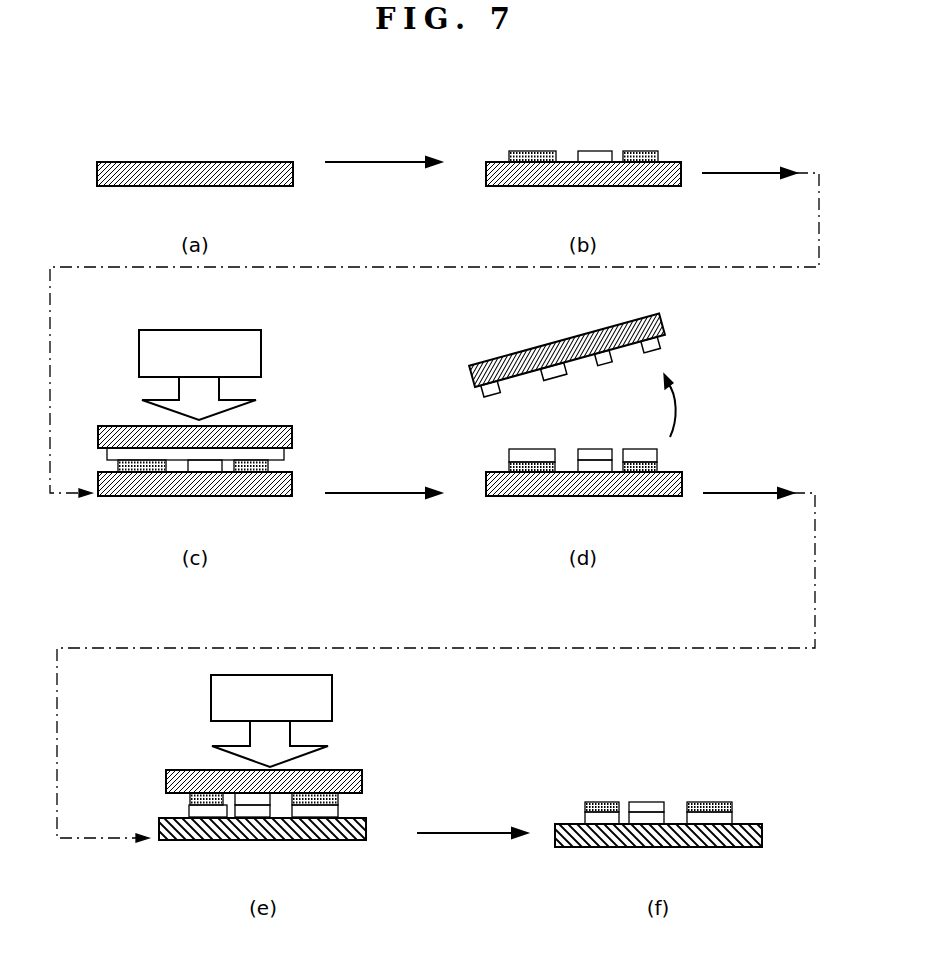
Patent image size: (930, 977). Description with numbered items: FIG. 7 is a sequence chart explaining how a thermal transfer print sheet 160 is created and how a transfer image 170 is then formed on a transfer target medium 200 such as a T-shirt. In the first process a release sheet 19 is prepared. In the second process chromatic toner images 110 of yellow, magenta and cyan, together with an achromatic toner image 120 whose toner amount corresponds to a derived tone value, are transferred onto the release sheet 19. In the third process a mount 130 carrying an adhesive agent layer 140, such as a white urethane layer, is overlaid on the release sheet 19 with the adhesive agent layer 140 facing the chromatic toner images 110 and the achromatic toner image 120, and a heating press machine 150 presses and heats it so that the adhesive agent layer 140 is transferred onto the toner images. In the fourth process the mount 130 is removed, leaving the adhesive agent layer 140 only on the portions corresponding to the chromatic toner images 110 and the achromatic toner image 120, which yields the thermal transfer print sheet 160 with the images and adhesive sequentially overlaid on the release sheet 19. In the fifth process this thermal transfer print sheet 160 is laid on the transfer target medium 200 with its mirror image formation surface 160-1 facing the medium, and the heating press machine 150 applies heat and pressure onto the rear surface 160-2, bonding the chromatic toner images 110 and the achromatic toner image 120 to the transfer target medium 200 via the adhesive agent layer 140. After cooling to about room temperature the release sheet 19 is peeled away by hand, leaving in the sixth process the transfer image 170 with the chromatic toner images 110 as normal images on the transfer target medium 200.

The release sheet 19 is at (203, 187).
The chromatic toner images 110 is at (533, 150).
The achromatic toner image 120 is at (598, 150).
The mount 130 is at (292, 436).
The adhesive agent layer 140 is at (107, 457).
The heating press machine 150 is at (268, 330).
The thermal transfer print sheet 160 is at (745, 396).
The mirror image formation surface 160-1 is at (340, 797).
The rear surface of the mirror image formation surface 160-2 is at (196, 770).
The transfer image 170 is at (745, 688).
The transfer target medium 200 is at (352, 842).